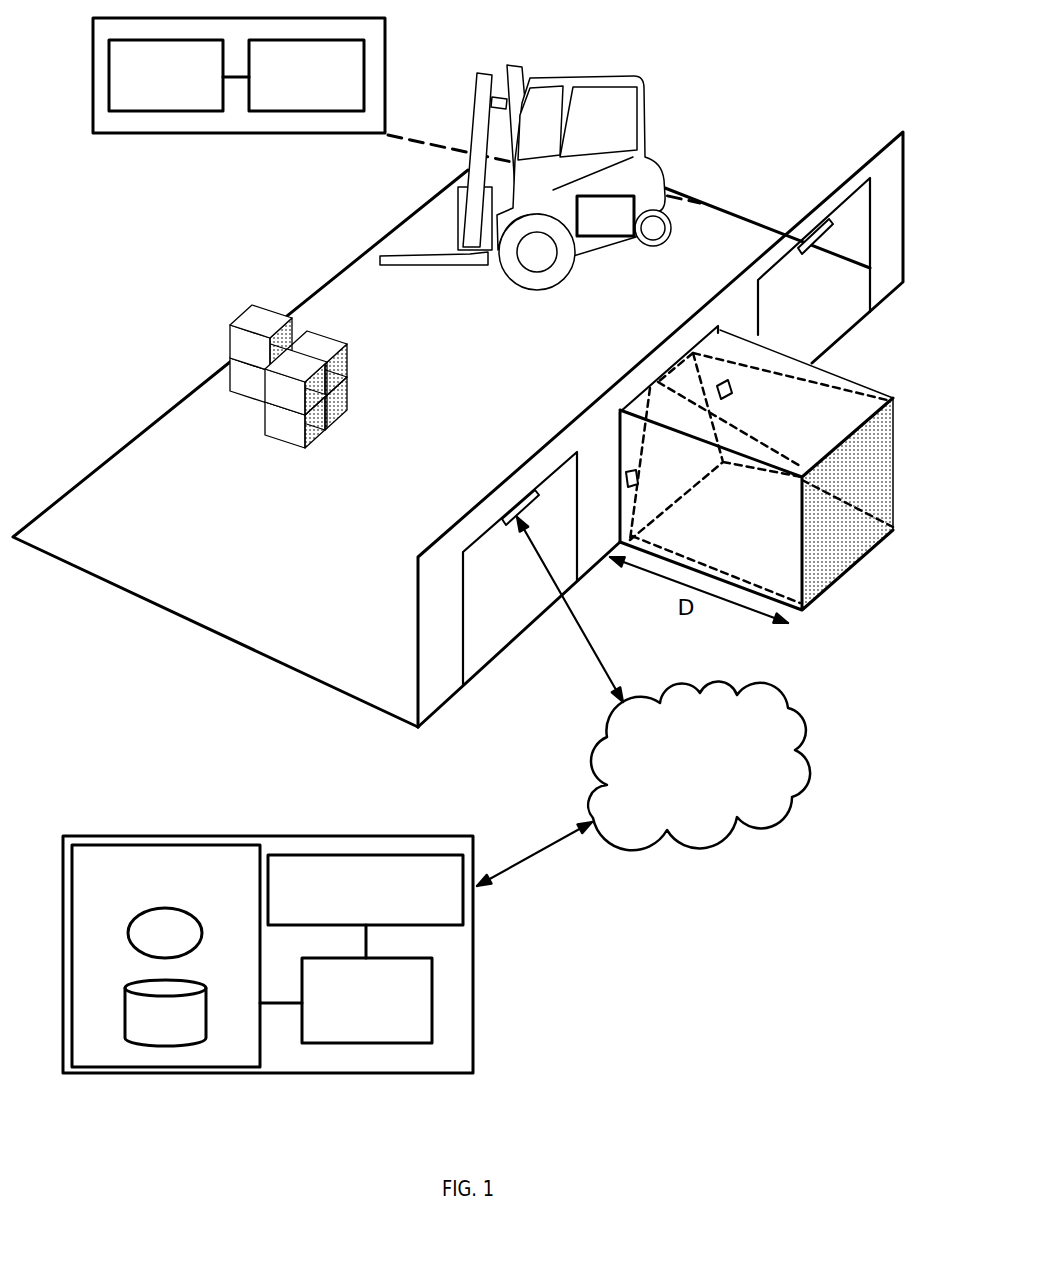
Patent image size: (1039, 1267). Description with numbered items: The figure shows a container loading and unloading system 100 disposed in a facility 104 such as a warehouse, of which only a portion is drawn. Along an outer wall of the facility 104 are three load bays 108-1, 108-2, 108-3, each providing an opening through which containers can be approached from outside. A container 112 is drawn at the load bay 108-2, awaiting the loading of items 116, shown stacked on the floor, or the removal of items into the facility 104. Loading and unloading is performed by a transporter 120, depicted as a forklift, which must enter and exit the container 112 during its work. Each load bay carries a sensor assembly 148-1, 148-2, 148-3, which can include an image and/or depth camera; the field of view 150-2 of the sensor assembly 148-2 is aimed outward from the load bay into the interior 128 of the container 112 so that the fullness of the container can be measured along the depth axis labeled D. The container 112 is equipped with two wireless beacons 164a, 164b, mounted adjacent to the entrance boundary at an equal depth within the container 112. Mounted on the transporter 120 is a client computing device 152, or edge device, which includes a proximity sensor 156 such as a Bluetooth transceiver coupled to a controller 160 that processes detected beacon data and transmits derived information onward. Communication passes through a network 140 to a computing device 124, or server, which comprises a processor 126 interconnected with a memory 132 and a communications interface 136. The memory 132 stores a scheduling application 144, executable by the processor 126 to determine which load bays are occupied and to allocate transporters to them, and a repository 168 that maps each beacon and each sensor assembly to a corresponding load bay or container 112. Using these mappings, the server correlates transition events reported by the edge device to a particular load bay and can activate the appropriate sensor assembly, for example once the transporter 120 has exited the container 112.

The container loading and unloading system 100 is at (737, 907).
The facility 104 is at (77, 483).
The load bay 108-1 is at (857, 177).
The load bay 108-2 is at (614, 460).
The load bay 108-3 is at (463, 568).
The container 112 is at (808, 600).
The items 116 is at (246, 312).
The transporter 120 is at (525, 145).
The computing device 124 is at (268, 903).
The processor 126 is at (348, 1001).
The interior 128 is at (750, 564).
The memory 132 is at (147, 876).
The communications interface 136 is at (348, 891).
The network 140 is at (681, 769).
The scheduling application 144 is at (147, 944).
The sensor assembly 148-1 is at (813, 227).
The sensor assembly 148-2 is at (670, 363).
The sensor assembly 148-3 is at (517, 502).
The field of view 150-2 is at (823, 383).
The client computing device 152 is at (590, 227).
The proximity sensor 156 is at (149, 74).
The controller 160 is at (289, 74).
The wireless beacon 164a is at (640, 481).
The wireless beacon 164b is at (732, 392).
The repository 168 is at (147, 1029).